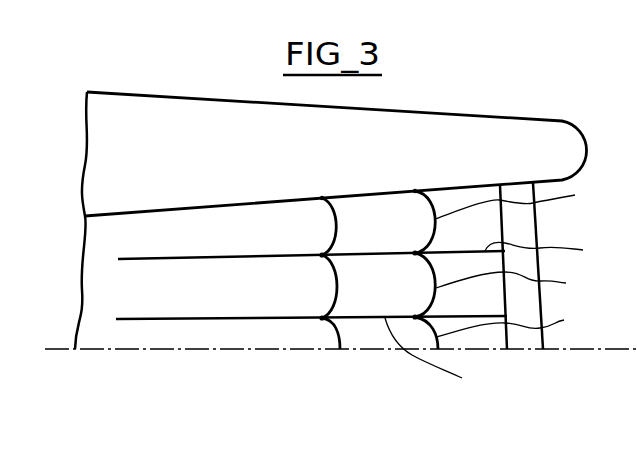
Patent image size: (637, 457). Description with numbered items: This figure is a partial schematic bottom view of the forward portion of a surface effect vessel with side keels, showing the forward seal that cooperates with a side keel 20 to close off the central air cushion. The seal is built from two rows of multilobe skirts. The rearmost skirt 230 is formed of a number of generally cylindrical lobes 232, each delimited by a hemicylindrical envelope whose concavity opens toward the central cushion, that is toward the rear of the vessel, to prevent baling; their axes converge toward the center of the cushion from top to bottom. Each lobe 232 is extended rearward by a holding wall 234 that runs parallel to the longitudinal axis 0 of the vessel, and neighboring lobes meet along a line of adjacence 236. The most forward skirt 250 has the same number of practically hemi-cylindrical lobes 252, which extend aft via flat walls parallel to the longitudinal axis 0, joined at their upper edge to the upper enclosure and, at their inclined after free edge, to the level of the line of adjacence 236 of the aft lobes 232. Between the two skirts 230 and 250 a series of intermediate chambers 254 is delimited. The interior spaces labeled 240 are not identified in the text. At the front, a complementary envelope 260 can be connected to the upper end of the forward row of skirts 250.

The longitudinal axis 0 is at (50, 348).
The side keel 20 is at (524, 143).
The aft multilobe skirt 230 is at (349, 215).
The lobe 232 is at (320, 222).
The holding wall 234 is at (168, 258).
The line of adjacence 236 is at (316, 259).
The channel 240 is at (409, 219).
The forward multilobe skirt 250 is at (474, 227).
The lobe 252 is at (524, 260).
The intermediate chamber 254 is at (504, 313).
The complementary envelope 260 is at (525, 340).